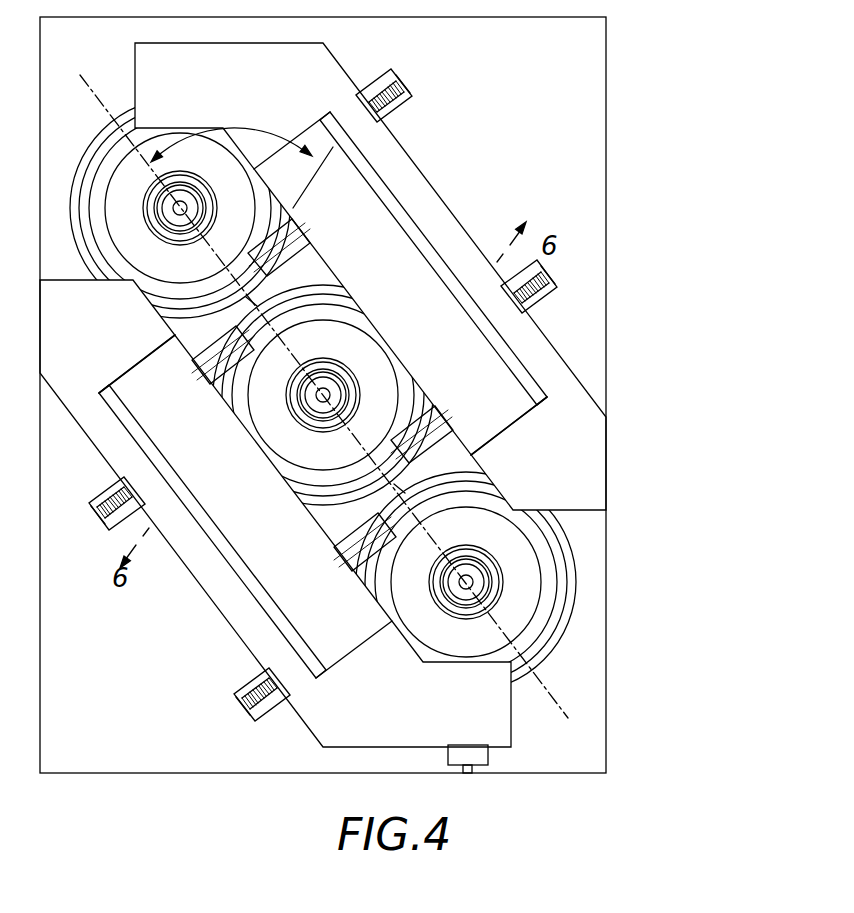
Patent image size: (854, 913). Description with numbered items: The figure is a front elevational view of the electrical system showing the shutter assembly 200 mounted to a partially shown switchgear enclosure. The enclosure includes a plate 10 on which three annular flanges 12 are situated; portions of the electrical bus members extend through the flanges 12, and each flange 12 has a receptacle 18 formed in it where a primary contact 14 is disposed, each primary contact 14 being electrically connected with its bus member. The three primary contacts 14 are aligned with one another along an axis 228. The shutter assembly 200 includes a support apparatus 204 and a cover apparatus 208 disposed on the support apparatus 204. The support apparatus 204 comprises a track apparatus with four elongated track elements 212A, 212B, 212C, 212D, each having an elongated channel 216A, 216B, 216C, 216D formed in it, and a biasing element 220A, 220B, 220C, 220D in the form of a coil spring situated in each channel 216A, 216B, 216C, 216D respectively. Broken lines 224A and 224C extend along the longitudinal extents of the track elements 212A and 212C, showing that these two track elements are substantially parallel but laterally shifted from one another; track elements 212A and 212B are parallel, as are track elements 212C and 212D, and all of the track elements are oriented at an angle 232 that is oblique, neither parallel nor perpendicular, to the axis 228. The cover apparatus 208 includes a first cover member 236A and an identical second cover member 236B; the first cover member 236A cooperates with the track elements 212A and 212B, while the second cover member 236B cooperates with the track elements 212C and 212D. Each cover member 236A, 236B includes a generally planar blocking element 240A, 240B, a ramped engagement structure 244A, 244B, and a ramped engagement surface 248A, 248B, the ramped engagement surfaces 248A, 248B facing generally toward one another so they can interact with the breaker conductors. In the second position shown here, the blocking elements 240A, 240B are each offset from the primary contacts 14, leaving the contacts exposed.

The plate 10 is at (607, 57).
The annular flange 12 is at (80, 157).
The primary contact 14 is at (160, 206).
The receptacle 18 is at (152, 260).
The shutter assembly 200 is at (526, 760).
The support apparatus 204 is at (251, 695).
The cover apparatus 208 is at (275, 545).
The track element 212A is at (398, 75).
The track element 212B is at (545, 282).
The track element 212C is at (108, 495).
The track element 212D is at (238, 694).
The elongated channel 216A is at (372, 83).
The elongated channel 216B is at (530, 318).
The elongated channel 216C is at (105, 482).
The elongated channel 216D is at (272, 700).
The biasing element 220A is at (408, 104).
The biasing element 220B is at (550, 268).
The biasing element 220C is at (98, 525).
The biasing element 220D is at (248, 680).
The broken line 224A is at (305, 245).
The broken line 224C is at (215, 375).
The axis 228 is at (550, 700).
The angle 232 is at (250, 133).
The first cover member 236A is at (600, 385).
The second cover member 236B is at (370, 765).
The blocking element 240A is at (432, 187).
The blocking element 240B is at (200, 588).
The ramped engagement structure 244A is at (517, 448).
The ramped engagement structure 244B is at (363, 655).
The ramped engagement surface 248A is at (461, 359).
The ramped engagement surface 248B is at (255, 489).